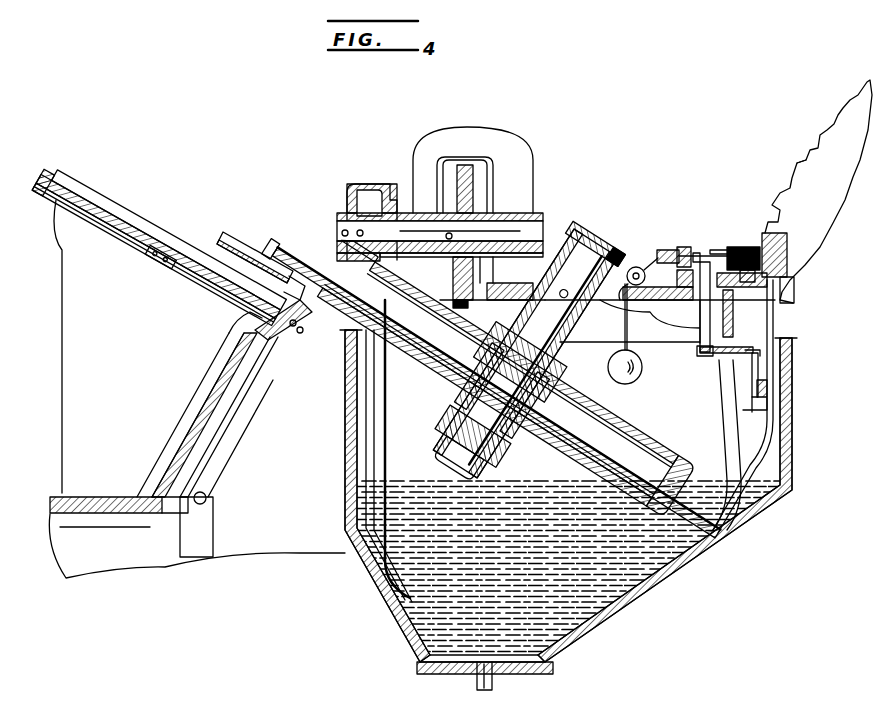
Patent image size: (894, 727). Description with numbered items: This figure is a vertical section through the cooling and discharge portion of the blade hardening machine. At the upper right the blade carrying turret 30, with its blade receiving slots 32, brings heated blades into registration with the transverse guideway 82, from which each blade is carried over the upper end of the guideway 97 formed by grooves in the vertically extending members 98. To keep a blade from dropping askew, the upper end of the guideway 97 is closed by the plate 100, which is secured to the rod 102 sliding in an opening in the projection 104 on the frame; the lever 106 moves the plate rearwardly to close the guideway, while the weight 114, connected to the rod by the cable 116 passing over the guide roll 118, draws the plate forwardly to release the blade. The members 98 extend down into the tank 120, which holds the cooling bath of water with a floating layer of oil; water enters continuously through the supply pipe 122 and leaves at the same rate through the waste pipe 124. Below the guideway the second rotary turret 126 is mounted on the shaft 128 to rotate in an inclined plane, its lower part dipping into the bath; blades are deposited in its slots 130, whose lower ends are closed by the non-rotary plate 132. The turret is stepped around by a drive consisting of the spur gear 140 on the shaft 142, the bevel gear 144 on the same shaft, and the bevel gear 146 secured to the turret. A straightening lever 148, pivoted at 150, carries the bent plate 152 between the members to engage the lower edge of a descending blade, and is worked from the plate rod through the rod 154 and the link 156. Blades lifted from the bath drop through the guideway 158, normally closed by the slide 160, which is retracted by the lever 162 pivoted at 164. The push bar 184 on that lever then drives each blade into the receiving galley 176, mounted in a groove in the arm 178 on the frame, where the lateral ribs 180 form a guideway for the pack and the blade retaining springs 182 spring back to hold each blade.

The blade carrying turret 30 is at (811, 129).
The blade receiving slots 32 is at (800, 152).
The transverse guideway 82 is at (788, 258).
The guideway 97 is at (779, 332).
The vertically extending members 98 is at (775, 320).
The plate 100 is at (760, 245).
The rod 102 is at (712, 246).
The projection 104 is at (690, 247).
The lever 106 is at (753, 250).
The weight 114 is at (643, 368).
The cable 116 is at (628, 343).
The guide roll 118 is at (636, 267).
The tank 120 is at (795, 465).
The supply pipe 122 is at (373, 420).
The waste pipe 124 is at (500, 684).
The second rotary turret 126 is at (590, 440).
The shaft 128 is at (456, 413).
The slots 130 is at (720, 527).
The non-rotary plate 132 is at (405, 372).
The spur gear 140 is at (470, 192).
The shaft 142 is at (543, 237).
The bevel gear 144 is at (367, 203).
The bevel gear 146 is at (357, 273).
The lever 148 is at (759, 360).
The pivot 150 is at (766, 390).
The bent plate 152 is at (770, 418).
The rod 154 is at (701, 318).
The link 156 is at (717, 360).
The guideway 158 is at (301, 322).
The slide 160 is at (290, 262).
The lever 162 is at (272, 394).
The pivot 164 is at (207, 497).
The receiving galley 176 is at (107, 193).
The arm 178 is at (110, 243).
The lateral ribs 180 is at (127, 216).
The blade retaining springs 182 is at (187, 252).
The push bar 184 is at (289, 352).